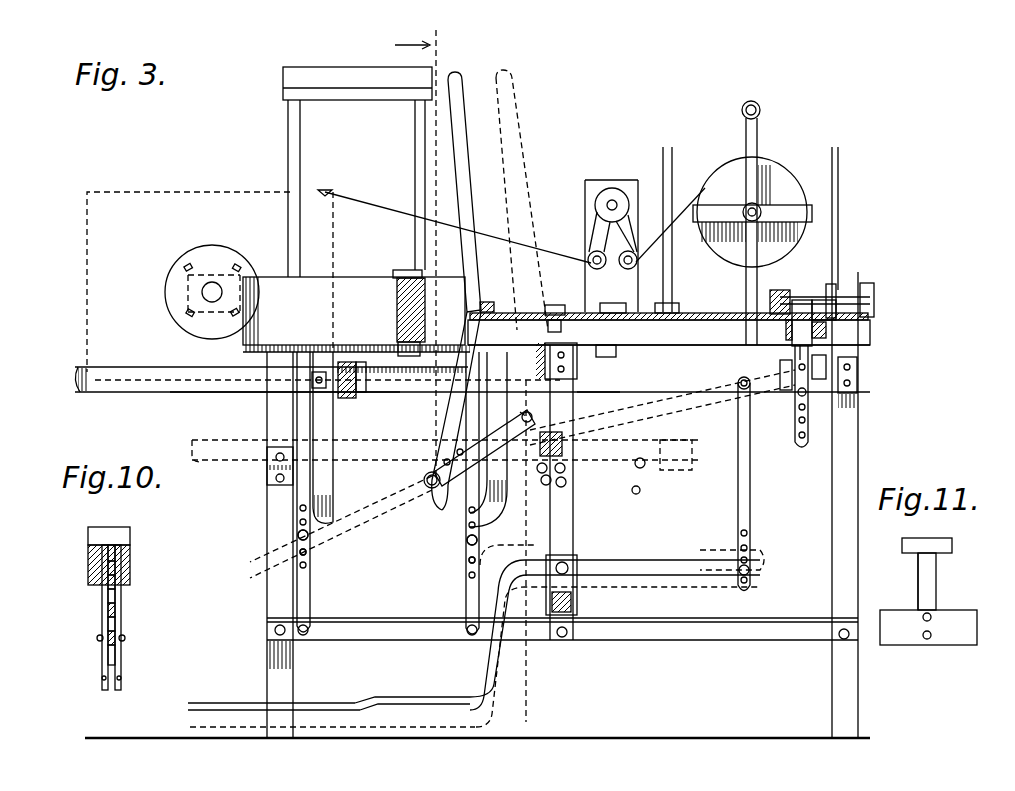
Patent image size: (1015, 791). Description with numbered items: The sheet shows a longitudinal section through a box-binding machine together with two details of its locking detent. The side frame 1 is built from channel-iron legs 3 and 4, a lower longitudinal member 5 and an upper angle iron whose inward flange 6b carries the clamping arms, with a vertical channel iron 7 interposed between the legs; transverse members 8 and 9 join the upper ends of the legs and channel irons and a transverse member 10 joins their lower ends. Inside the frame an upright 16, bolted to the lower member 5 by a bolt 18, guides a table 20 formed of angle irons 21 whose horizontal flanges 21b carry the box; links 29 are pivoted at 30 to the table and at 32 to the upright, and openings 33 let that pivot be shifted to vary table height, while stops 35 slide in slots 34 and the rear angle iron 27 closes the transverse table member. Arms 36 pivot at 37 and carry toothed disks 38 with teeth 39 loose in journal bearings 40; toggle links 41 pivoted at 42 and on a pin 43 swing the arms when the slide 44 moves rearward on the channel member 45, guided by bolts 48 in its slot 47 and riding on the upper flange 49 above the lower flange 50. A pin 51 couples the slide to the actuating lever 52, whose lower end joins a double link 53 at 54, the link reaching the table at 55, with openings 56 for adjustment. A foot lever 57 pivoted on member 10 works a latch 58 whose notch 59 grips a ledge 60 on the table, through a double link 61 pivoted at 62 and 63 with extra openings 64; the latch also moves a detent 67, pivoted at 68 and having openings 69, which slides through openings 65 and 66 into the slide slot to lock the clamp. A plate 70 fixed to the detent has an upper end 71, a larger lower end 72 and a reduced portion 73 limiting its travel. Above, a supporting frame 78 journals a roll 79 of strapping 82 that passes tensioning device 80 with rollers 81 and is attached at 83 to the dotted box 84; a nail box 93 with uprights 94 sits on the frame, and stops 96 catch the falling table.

In FIG. 3, the side frame 1 is at (262, 540).
In FIG. 3, the leg 3 is at (272, 672).
In FIG. 3, the leg 4 is at (874, 698).
In FIG. 3, the lower longitudinal member 5 is at (748, 628).
In FIG. 3, the vertical channel iron 7 is at (574, 519).
In FIG. 3, the transverse member 8 is at (466, 588).
In FIG. 3, the transverse member 9 is at (578, 370).
In FIG. 3, the transverse member 10 is at (578, 603).
In FIG. 3, the upright 16 is at (311, 593).
In FIG. 3, the bolt 18 is at (304, 636).
In FIG. 3, the table 20 is at (232, 366).
In FIG. 3, the angle iron 21 is at (155, 366).
In FIG. 3, the horizontal flange 21b is at (218, 393).
In FIG. 3, the angle iron 27 is at (520, 410).
In FIG. 3, the link 29 is at (330, 476).
In FIG. 3, the upper pivot 30 is at (320, 370).
In FIG. 3, the pivotal connection 32 is at (308, 537).
In FIG. 3, the opening 33 is at (306, 554).
In FIG. 3, the longitudinal slot 34 is at (352, 398).
In FIG. 3, the transverse stop 35 is at (360, 345).
In FIG. 3, the arm 36 is at (360, 278).
In FIG. 3, the pivot 37 is at (402, 270).
In FIG. 3, the disk 38 is at (166, 290).
In FIG. 3, the tooth 39 is at (186, 266).
In FIG. 3, the journal bearing 40 is at (211, 282).
In FIG. 3, the link 41 is at (838, 290).
In FIG. 3, the outer pivot 42 is at (868, 283).
In FIG. 3, the pin 43 is at (778, 290).
In FIG. 3, the slide 44 is at (704, 313).
In FIG. 10, the slide 44 is at (88, 534).
In FIG. 3, the channel member 45 is at (522, 348).
In FIG. 3, the slot 47 is at (608, 313).
In FIG. 10, the slot 47 is at (110, 528).
In FIG. 3, the guiding bolt 48 is at (556, 305).
In FIG. 3, the upper flange 49 is at (606, 322).
In FIG. 10, the upper flange 49 is at (130, 540).
In FIG. 3, the lower flange 50 is at (618, 350).
In FIG. 10, the lower flange 50 is at (122, 584).
In FIG. 3, the pin 51 is at (480, 308).
In FIG. 3, the actuating lever 52 is at (466, 162).
In FIG. 3, the double link 53 is at (448, 488).
In FIG. 3, the link end 54 is at (424, 480).
In FIG. 3, the link end 55 is at (648, 512).
In FIG. 3, the opening 56 is at (420, 470).
In FIG. 3, the foot lever 57 is at (352, 703).
In FIG. 3, the latch 58 is at (660, 426).
In FIG. 10, the latch 58 is at (98, 640).
In FIG. 3, the notch 59 is at (578, 392).
In FIG. 3, the ledge 60 is at (446, 463).
In FIG. 3, the double link 61 is at (738, 504).
In FIG. 3, the upper pivot 62 is at (742, 392).
In FIG. 3, the lower pivot 63 is at (750, 582).
In FIG. 3, the opening 64 is at (750, 540).
In FIG. 3, the upper opening 65 is at (790, 328).
In FIG. 10, the upper opening 65 is at (104, 540).
In FIG. 3, the lower opening 66 is at (792, 350).
In FIG. 10, the lower opening 66 is at (100, 576).
In FIG. 3, the detent 67 is at (810, 432).
In FIG. 10, the detent 67 is at (102, 658).
In FIG. 3, the pivot 68 is at (806, 393).
In FIG. 10, the pivot 68 is at (126, 638).
In FIG. 3, the opening 69 is at (798, 425).
In FIG. 10, the opening 69 is at (122, 678).
In FIG. 3, the plate 70 is at (826, 372).
In FIG. 10, the plate 70 is at (122, 616).
In FIG. 11, the plate 70 is at (917, 590).
In FIG. 3, the upper end 71 is at (818, 326).
In FIG. 10, the upper end 71 is at (121, 558).
In FIG. 11, the upper end 71 is at (952, 548).
In FIG. 3, the lower end 72 is at (786, 392).
In FIG. 10, the lower end 72 is at (102, 608).
In FIG. 11, the lower end 72 is at (966, 640).
In FIG. 3, the intermediate portion 73 is at (790, 330).
In FIG. 10, the intermediate portion 73 is at (102, 590).
In FIG. 11, the intermediate portion 73 is at (934, 584).
In FIG. 3, the supporting frame 78 is at (762, 223).
In FIG. 3, the roll 79 is at (786, 188).
In FIG. 3, the tensioning device 80 is at (598, 182).
In FIG. 3, the roller 81 is at (590, 255).
In FIG. 3, the strapping 82 is at (676, 212).
In FIG. 3, the attachment point 83 is at (325, 190).
In FIG. 3, the box 84 is at (112, 192).
In FIG. 3, the nail box 93 is at (357, 71).
In FIG. 3, the upright 94 is at (288, 128).
In FIG. 3, the stop 96 is at (270, 472).
In FIG. 3, the horizontal flange 6b is at (360, 362).